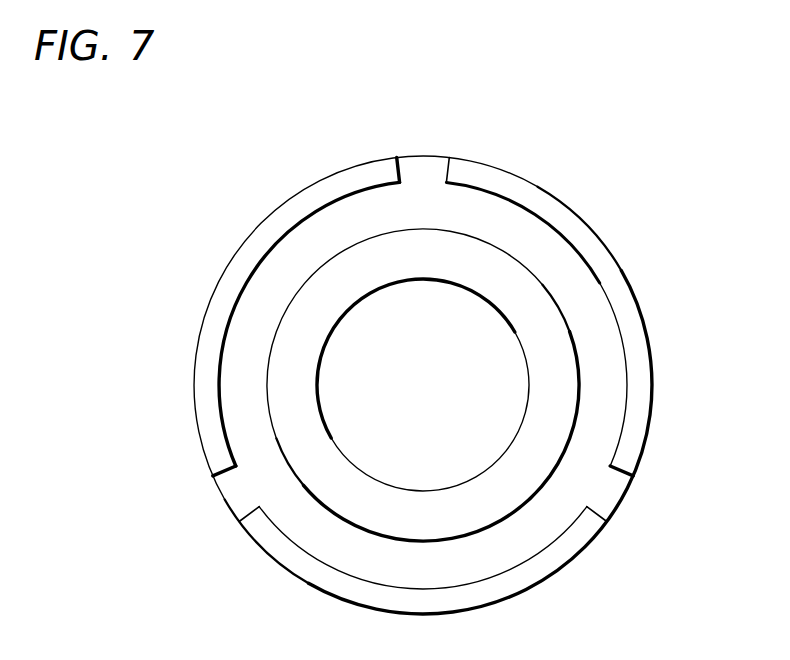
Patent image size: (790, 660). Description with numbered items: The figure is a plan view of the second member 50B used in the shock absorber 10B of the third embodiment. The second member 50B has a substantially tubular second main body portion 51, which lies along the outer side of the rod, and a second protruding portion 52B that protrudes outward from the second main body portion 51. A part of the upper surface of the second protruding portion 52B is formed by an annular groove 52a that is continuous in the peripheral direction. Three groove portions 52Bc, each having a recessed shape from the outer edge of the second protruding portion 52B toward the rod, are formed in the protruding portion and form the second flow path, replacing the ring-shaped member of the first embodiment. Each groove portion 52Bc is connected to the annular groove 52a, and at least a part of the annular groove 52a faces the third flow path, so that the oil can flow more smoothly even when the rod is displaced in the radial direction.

The shock absorber 10B is at (213, 168).
The second member 50B is at (563, 127).
The second main body portion 51 is at (473, 265).
The second protruding portion 52B is at (585, 238).
The annular groove 52a is at (597, 330).
The groove portion 52Bc is at (422, 168).